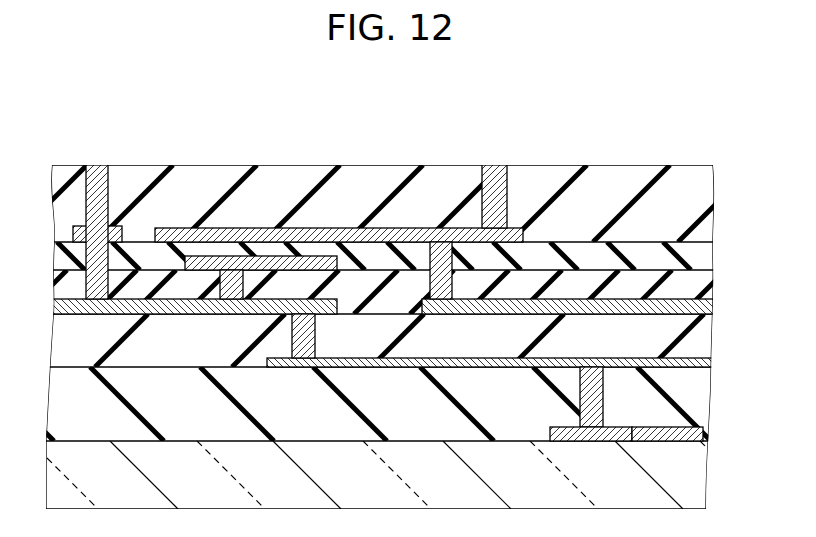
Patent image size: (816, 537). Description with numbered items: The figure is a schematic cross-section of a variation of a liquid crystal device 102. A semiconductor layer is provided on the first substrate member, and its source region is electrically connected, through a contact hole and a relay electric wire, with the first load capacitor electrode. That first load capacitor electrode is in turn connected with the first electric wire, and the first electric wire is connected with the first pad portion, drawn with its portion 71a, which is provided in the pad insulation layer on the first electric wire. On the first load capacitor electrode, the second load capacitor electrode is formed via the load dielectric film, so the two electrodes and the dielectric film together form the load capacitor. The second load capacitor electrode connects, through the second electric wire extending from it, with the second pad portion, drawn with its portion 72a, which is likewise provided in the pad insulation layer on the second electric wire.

The liquid crystal device 102 is at (665, 114).
The via conductor portion 71a is at (97, 232).
The via conductor portion 72a is at (494, 196).